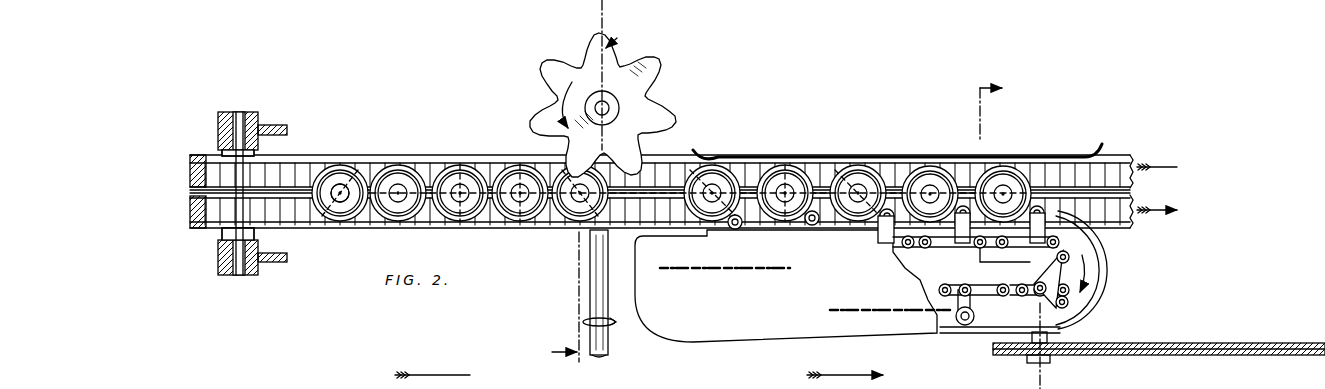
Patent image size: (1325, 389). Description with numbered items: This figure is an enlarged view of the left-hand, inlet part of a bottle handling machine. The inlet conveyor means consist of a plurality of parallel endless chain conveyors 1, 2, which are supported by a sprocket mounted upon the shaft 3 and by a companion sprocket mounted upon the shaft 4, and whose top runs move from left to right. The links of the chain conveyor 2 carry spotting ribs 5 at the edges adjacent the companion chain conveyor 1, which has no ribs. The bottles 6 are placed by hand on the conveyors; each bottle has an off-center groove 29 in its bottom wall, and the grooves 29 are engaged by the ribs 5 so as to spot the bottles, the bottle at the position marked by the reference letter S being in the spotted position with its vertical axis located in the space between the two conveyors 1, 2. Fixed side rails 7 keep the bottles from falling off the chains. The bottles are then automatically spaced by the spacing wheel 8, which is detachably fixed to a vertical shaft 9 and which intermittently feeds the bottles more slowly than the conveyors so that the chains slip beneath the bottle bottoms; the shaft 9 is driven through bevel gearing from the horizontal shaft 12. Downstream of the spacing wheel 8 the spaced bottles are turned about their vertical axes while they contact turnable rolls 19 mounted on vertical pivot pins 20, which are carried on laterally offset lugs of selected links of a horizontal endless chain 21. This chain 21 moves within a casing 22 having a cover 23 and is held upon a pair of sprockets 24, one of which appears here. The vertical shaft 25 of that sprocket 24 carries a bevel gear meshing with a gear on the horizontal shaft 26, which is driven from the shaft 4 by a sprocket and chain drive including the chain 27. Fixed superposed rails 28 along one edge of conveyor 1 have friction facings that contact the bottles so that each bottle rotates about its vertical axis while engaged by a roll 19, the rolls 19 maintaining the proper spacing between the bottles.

The endless chain conveyor 1 is at (192, 156).
The endless chain conveyor 2 is at (190, 228).
The shaft 3 is at (243, 112).
The shaft 4 is at (1002, 113).
The spotting ribs 5 is at (190, 195).
The bottles 6 is at (326, 215).
The fixed side rails 7 is at (300, 160).
The spacing wheel 8 is at (582, 181).
The vertical shaft 9 is at (604, 106).
The horizontal shaft 12 is at (609, 348).
The turnable rolls 19 is at (736, 230).
The vertical pivot pins 20 is at (812, 226).
The horizontal endless chain 21 is at (946, 285).
The casing 22 is at (1104, 270).
The cover 23 is at (805, 299).
The sprocket 24 is at (1068, 252).
The vertical shaft 25 is at (1005, 254).
The horizontal shaft 26 is at (1050, 334).
The chain 27 is at (1142, 345).
The fixed superposed rails 28 is at (1060, 156).
The grooves 29 is at (342, 190).
The spotted position S is at (1015, 168).